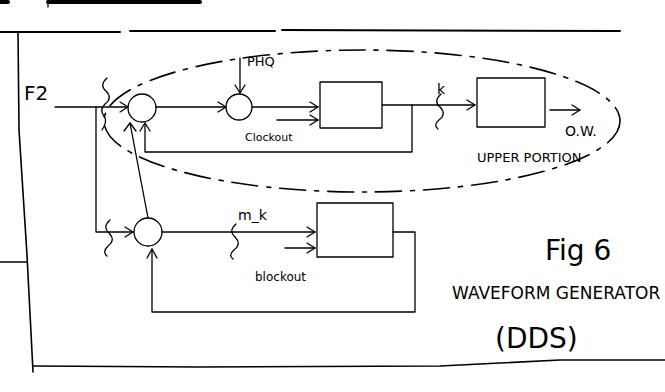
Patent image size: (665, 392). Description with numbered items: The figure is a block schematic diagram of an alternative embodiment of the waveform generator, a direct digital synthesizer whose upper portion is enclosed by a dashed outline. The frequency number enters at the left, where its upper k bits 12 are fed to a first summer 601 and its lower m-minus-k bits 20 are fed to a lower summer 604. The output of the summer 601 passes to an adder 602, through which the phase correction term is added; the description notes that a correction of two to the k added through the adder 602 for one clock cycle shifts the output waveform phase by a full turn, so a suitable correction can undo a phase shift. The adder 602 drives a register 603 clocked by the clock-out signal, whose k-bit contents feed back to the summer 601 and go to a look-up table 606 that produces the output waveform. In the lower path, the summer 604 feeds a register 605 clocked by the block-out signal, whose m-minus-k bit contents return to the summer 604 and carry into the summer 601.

The upper k input signal 12 is at (98, 103).
The lower (m-k) input signal 20 is at (87, 238).
The upper summer 601 is at (147, 99).
The adder 602 is at (251, 97).
The upper register 603 is at (351, 97).
The lower summer 604 is at (162, 224).
The lower register 605 is at (373, 230).
The look-up table 606 is at (527, 102).